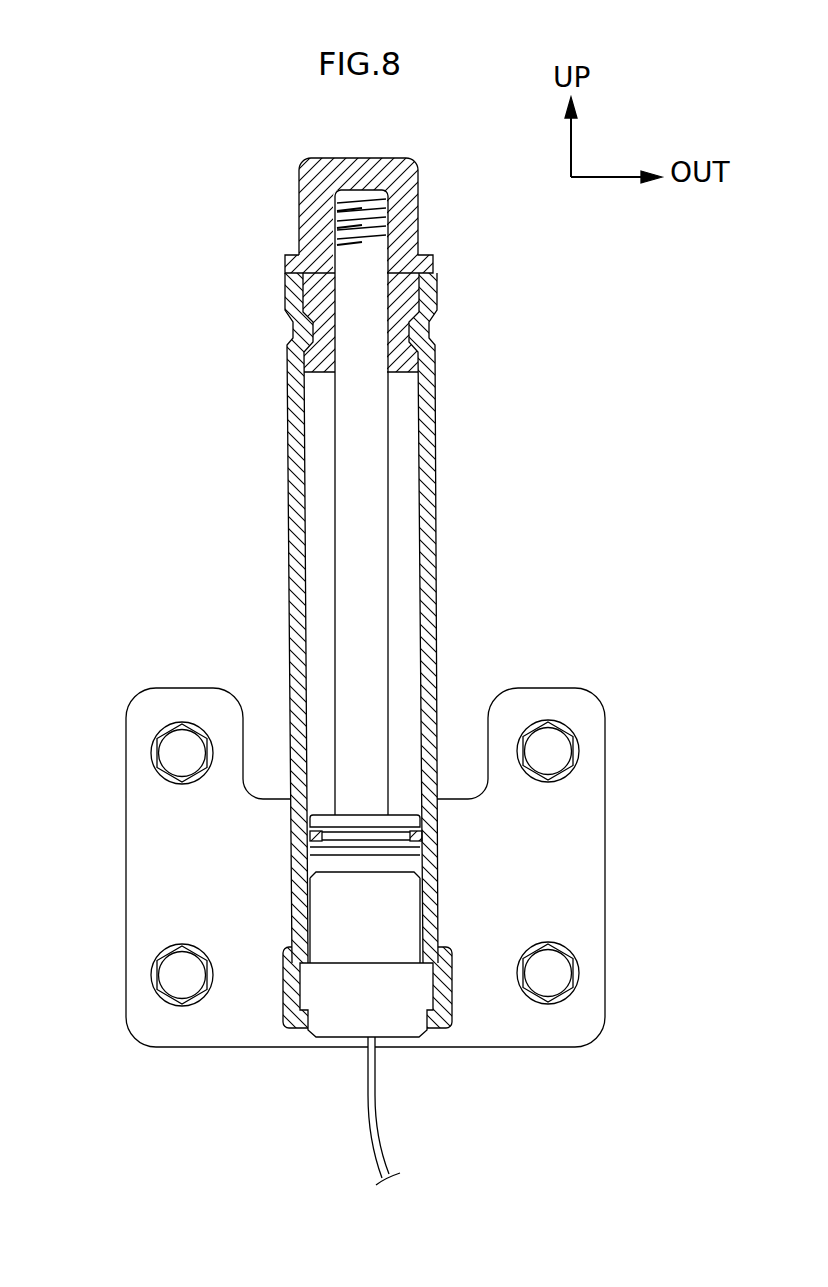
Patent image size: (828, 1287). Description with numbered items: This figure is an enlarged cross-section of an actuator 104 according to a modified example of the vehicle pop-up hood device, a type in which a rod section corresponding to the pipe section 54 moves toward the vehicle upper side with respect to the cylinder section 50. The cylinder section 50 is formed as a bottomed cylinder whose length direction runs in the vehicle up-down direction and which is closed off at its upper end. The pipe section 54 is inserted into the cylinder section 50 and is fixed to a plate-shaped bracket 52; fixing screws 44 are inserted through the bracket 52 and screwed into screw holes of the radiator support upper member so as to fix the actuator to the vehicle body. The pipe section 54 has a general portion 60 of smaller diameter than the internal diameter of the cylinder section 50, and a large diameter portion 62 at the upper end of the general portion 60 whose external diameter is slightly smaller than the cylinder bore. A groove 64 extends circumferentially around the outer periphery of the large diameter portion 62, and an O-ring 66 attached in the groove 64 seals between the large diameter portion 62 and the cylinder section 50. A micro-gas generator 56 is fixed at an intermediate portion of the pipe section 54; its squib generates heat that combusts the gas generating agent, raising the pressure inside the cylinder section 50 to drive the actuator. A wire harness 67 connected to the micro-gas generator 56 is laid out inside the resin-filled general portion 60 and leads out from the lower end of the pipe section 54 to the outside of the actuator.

The actuator 104 is at (173, 280).
The fixing screw 44 is at (158, 765).
The cylinder section 50 is at (437, 530).
The bracket 52 is at (605, 815).
The pipe section 54 is at (389, 415).
The micro-gas generator 56 is at (325, 1000).
The general portion 60 is at (388, 592).
The large diameter portion 62 is at (383, 880).
The groove 64 is at (422, 838).
The O-ring 66 is at (310, 838).
The wire harness 67 is at (380, 1125).